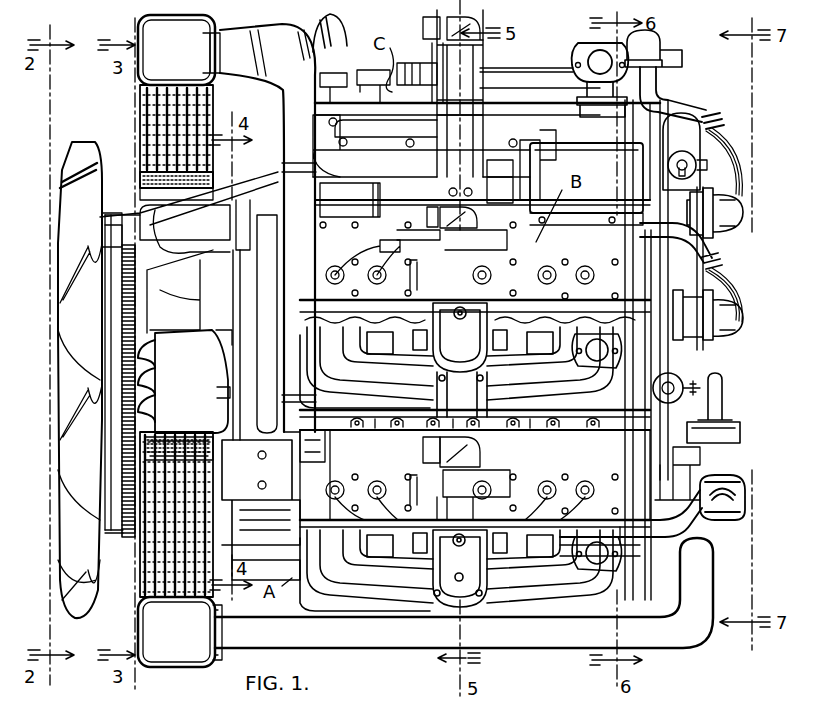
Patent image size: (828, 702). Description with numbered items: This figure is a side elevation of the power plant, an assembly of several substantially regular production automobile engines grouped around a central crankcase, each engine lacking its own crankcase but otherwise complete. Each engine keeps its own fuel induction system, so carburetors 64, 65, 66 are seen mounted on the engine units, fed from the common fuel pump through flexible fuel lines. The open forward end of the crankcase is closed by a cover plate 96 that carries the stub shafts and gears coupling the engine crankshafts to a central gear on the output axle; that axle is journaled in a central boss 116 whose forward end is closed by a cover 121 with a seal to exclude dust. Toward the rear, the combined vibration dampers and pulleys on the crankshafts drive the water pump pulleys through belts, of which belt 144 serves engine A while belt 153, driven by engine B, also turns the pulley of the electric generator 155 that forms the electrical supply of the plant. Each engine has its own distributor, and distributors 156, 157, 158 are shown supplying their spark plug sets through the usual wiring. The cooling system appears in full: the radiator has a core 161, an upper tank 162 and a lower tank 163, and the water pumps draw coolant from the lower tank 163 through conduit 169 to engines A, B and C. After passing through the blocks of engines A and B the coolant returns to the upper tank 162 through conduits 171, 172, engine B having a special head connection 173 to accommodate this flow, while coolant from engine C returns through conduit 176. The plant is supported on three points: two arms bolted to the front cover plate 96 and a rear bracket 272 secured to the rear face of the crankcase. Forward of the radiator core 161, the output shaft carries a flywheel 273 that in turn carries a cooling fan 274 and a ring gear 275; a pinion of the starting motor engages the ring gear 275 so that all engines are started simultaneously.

The carburetor 64 is at (480, 458).
The carburetor 65 is at (427, 216).
The carburetor 66 is at (424, 30).
The cover plate 96 is at (230, 397).
The central boss 116 is at (190, 338).
The cover 121 is at (148, 378).
The belt 144 is at (688, 450).
The belt 153 is at (648, 194).
The electric generator 155 is at (548, 148).
The distributor 156 is at (720, 520).
The distributor 157 is at (718, 344).
The distributor 158 is at (718, 236).
The radiator core 161 is at (140, 112).
The upper tank 162 is at (150, 68).
The lower tank 163 is at (195, 656).
The conduit 169 is at (410, 640).
The conduit 171 is at (282, 364).
The conduit 172 is at (283, 104).
The special head connection 173 is at (320, 250).
The conduit 176 is at (318, 48).
The bracket 272 is at (742, 424).
The flywheel 273 is at (115, 536).
The cooling fan 274 is at (84, 604).
The ring gear 275 is at (138, 214).